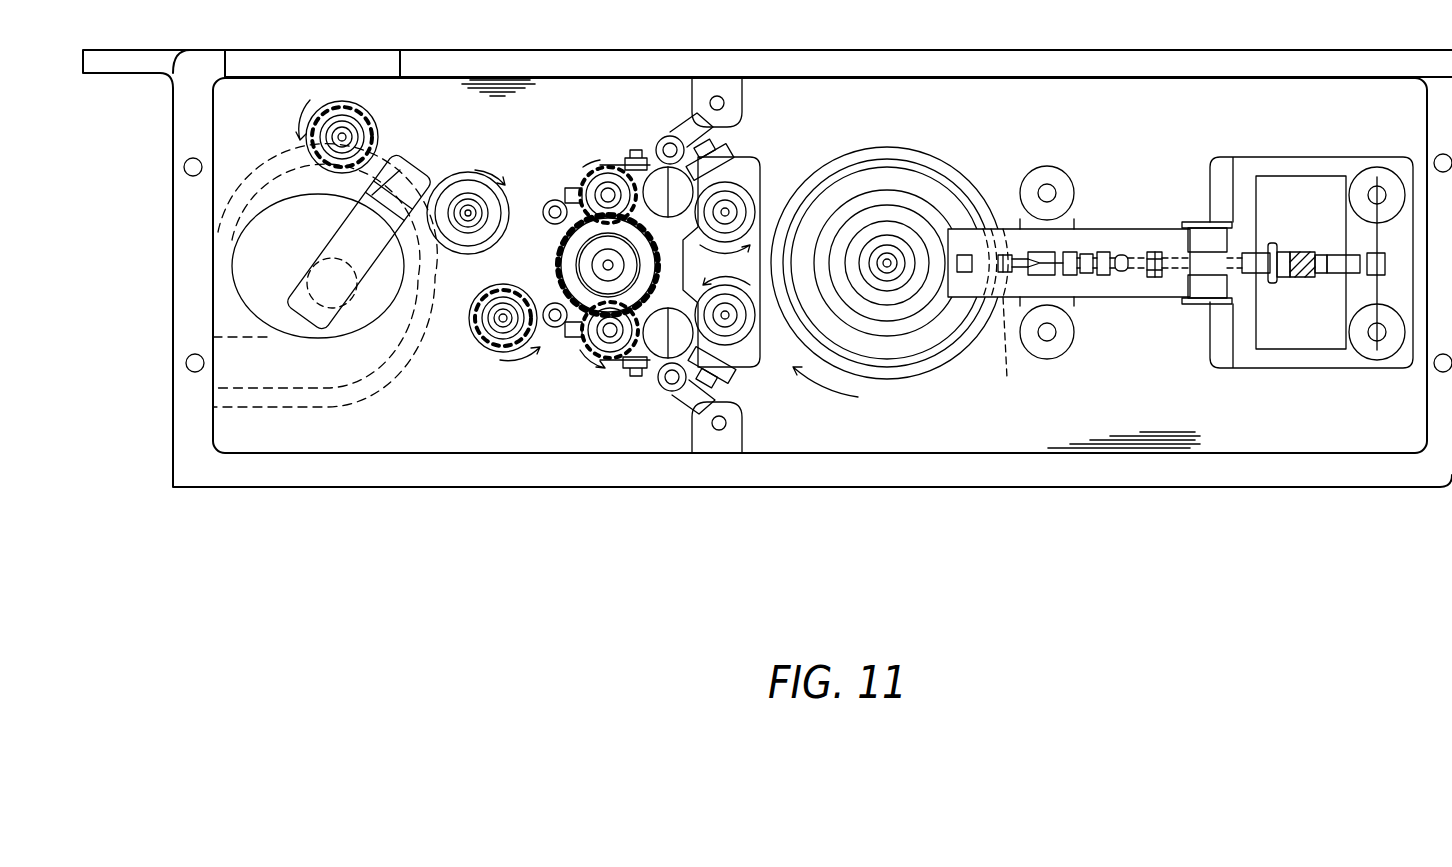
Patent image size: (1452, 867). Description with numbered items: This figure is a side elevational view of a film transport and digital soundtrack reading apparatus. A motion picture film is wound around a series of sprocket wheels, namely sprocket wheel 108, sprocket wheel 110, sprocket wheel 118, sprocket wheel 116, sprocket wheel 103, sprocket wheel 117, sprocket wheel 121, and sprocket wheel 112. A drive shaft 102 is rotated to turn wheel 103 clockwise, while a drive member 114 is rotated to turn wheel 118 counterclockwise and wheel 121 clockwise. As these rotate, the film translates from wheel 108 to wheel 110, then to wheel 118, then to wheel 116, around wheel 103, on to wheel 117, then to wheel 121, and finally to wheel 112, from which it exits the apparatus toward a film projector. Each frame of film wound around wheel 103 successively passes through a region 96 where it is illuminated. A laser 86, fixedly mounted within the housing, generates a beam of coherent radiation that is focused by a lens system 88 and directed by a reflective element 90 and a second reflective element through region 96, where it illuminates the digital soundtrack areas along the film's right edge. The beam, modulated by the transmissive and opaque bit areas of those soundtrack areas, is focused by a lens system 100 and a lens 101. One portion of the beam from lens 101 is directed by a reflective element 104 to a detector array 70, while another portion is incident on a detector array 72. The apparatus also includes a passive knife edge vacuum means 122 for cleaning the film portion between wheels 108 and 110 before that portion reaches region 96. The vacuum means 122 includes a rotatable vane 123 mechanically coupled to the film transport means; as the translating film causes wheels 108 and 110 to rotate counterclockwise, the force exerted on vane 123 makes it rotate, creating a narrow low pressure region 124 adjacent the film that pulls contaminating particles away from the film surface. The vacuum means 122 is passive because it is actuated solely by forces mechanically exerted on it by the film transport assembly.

The detector array 70 is at (1295, 277).
The detector array 72 is at (1370, 272).
The laser 86 is at (1152, 255).
The lens system 88 is at (1190, 222).
The reflective element 90 is at (965, 272).
The region 96 is at (1007, 378).
The lens system 100 is at (1068, 300).
The lens 101 is at (1272, 248).
The drive shaft 102 is at (887, 247).
The sprocket wheel 103 is at (943, 177).
The reflective element 104 is at (1298, 250).
The sprocket wheel 108 is at (378, 110).
The sprocket wheel 110 is at (466, 175).
The sprocket wheel 112 is at (485, 348).
The drive member 114 is at (556, 264).
The sprocket wheel 116 is at (730, 186).
The sprocket wheel 117 is at (733, 342).
The sprocket wheel 118 is at (605, 170).
The sprocket wheel 121 is at (598, 352).
The vacuum means 122 is at (250, 190).
The rotatable vane 123 is at (288, 340).
The low pressure region 124 is at (390, 195).